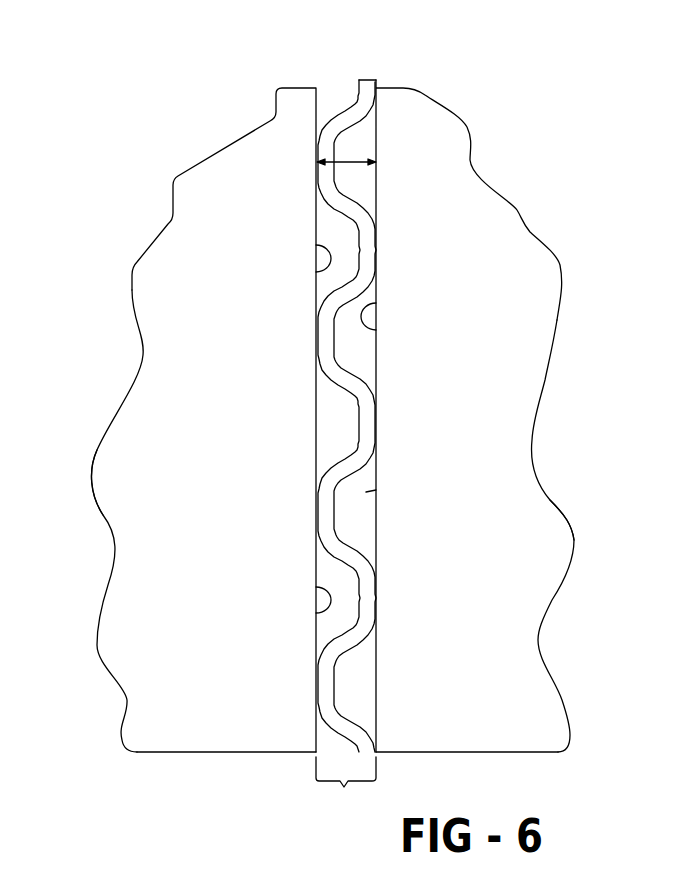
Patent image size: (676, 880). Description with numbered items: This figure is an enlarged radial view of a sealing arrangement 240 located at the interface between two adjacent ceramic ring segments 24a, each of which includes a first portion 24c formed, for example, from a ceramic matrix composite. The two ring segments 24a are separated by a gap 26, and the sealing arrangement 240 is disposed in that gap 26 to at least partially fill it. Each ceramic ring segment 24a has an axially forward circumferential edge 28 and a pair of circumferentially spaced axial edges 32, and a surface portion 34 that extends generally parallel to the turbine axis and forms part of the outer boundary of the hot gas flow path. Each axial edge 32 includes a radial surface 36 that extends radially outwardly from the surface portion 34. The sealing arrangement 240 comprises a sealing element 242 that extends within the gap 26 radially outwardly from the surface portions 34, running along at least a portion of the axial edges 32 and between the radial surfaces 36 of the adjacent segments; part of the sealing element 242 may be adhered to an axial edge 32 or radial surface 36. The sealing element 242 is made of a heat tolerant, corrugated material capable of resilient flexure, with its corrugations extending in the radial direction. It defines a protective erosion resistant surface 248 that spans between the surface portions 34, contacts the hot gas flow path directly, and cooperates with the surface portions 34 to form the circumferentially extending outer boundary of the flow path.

The ceramic ring segment 24a is at (99, 511).
The first portion 24c is at (347, 416).
The gap 26 is at (348, 160).
The axially forward circumferential edge 28 is at (228, 754).
The axial edges 32 is at (316, 587).
The surface portion 34 is at (135, 417).
The radial surface 36 is at (316, 245).
The sealing arrangement 240 is at (346, 786).
The sealing element 242 is at (336, 377).
The erosion resistant surface 248 is at (364, 401).